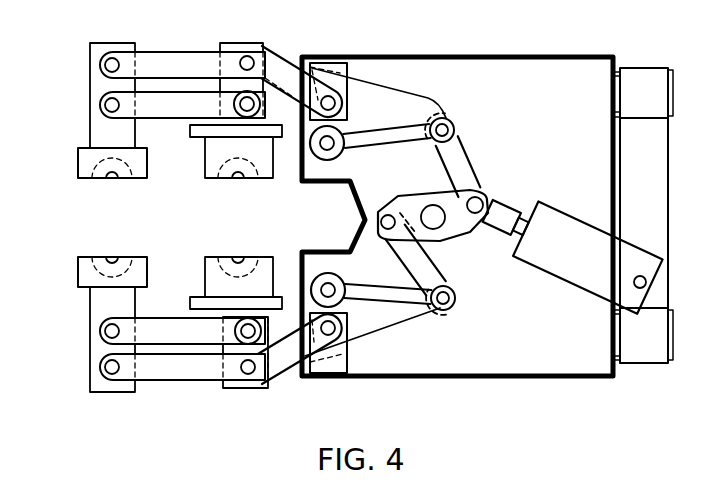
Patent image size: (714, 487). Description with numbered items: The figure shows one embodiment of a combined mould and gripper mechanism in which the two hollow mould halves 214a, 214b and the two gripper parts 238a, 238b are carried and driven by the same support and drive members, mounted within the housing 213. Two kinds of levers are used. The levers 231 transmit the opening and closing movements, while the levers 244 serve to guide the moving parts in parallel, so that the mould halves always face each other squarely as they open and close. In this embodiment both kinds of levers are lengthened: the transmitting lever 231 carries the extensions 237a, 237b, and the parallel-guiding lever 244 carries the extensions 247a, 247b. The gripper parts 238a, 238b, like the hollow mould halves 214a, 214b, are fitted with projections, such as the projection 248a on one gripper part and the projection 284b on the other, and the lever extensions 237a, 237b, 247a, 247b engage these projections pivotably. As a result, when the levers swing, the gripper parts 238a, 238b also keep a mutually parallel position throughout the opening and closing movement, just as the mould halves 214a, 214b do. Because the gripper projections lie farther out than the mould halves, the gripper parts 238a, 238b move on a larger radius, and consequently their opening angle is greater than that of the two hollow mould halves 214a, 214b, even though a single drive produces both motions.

The housing frame 213 is at (483, 360).
The hollow mould half 214a is at (208, 257).
The hollow mould half 214b is at (212, 153).
The lever 231 is at (281, 100).
The extension 237a is at (152, 333).
The extension 237b is at (182, 97).
The gripper part 238a is at (82, 270).
The gripper part 238b is at (82, 160).
The lever 244 is at (270, 64).
The extension 247a is at (178, 373).
The extension 247b is at (162, 60).
The projection 248a is at (95, 362).
The upper support post 284b is at (93, 50).